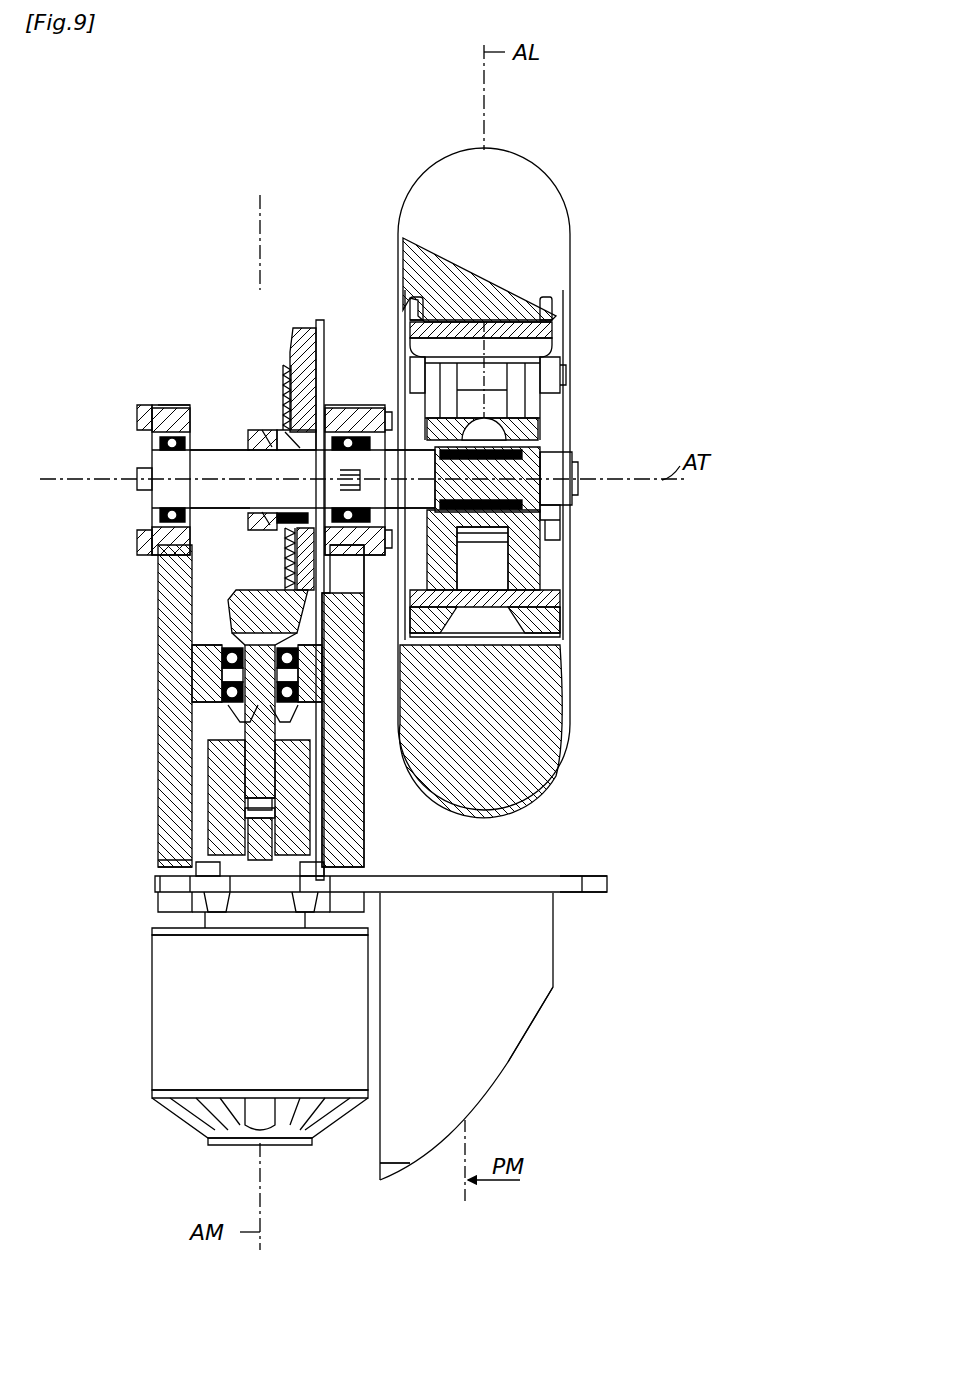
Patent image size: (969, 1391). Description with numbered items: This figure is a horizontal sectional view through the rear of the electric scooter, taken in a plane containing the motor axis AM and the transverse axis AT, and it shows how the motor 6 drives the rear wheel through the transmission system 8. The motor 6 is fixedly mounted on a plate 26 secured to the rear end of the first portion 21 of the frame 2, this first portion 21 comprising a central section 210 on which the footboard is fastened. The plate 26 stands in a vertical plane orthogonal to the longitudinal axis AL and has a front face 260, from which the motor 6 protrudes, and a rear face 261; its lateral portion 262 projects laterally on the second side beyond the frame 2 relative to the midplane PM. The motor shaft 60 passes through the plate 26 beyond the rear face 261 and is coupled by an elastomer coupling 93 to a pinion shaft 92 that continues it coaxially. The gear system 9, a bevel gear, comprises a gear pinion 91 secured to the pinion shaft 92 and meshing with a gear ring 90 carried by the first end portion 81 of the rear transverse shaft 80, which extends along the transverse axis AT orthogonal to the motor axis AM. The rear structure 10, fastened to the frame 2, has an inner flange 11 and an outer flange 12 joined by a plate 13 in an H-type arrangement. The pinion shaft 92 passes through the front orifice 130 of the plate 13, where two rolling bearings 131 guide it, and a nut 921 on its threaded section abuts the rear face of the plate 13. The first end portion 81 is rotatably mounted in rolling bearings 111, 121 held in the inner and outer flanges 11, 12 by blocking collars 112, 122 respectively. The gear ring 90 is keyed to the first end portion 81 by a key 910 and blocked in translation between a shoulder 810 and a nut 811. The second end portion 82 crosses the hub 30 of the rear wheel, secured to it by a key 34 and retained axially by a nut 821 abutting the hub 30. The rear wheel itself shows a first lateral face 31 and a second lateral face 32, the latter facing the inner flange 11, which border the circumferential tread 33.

The frame 2 is at (576, 1106).
The motor 6 is at (158, 1066).
The transmission system 8 is at (186, 242).
The gear system 9 is at (280, 340).
The rear structure 10 is at (367, 849).
The inner flange 11 is at (352, 822).
The outer flange 12 is at (172, 862).
The plate 13 is at (236, 640).
The first portion 21 is at (416, 1168).
The plate 26 is at (608, 885).
The hub 30 is at (532, 582).
The first lateral face 31 is at (576, 370).
The second lateral face 32 is at (397, 310).
The circumferential tread 33 is at (500, 168).
The key 34 is at (512, 505).
The motor shaft 60 is at (252, 830).
The rear transverse shaft 80 is at (206, 434).
The first end portion 81 is at (228, 460).
The second end portion 82 is at (530, 462).
The gear ring 90 is at (306, 328).
The gear pinion 91 is at (240, 600).
The pinion shaft 92 is at (255, 755).
The elastomer coupling 93 is at (216, 790).
The rolling bearing 111 is at (330, 420).
The blocking collar 112 is at (355, 440).
The rolling bearing 121 is at (170, 520).
The blocking collar 122 is at (170, 452).
The front orifice 130 is at (225, 680).
The rolling bearing 131 is at (225, 656).
The central section 210 is at (490, 1040).
The front face 260 is at (572, 892).
The rear face 261 is at (572, 876).
The lateral portion 262 is at (175, 887).
The shoulder 810 is at (322, 430).
The nut 811 is at (268, 432).
The nut 821 is at (552, 456).
The key 910 is at (275, 530).
The nut 921 is at (245, 715).